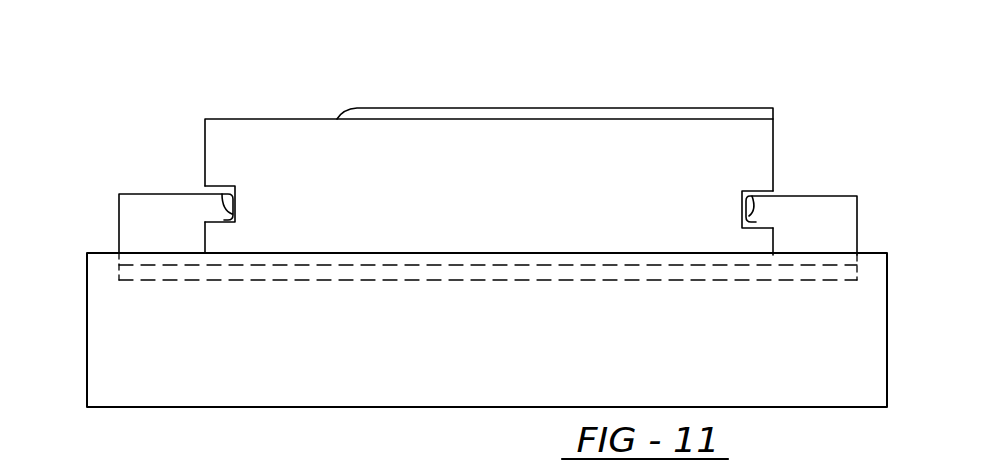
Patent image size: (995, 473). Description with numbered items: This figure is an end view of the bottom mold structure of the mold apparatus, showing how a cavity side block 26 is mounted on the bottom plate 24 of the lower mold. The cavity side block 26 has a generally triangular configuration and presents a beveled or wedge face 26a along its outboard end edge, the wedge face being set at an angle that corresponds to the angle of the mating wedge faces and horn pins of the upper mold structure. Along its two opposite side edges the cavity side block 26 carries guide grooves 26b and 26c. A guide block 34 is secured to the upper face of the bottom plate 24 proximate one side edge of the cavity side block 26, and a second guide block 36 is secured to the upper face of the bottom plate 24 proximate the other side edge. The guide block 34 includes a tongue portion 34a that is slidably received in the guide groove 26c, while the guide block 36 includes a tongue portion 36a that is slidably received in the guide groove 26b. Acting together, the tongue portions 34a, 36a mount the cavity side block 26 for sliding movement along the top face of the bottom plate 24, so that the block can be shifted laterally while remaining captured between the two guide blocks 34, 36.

The bottom plate 24 is at (86, 345).
The cavity side block 26 is at (307, 116).
The wedge face 26a is at (519, 193).
The guide groove 26b is at (228, 191).
The guide groove 26c is at (753, 202).
The guide block 34 is at (148, 191).
The tongue portion 34a is at (238, 222).
The guide block 36 is at (831, 190).
The tongue portion 36a is at (757, 218).